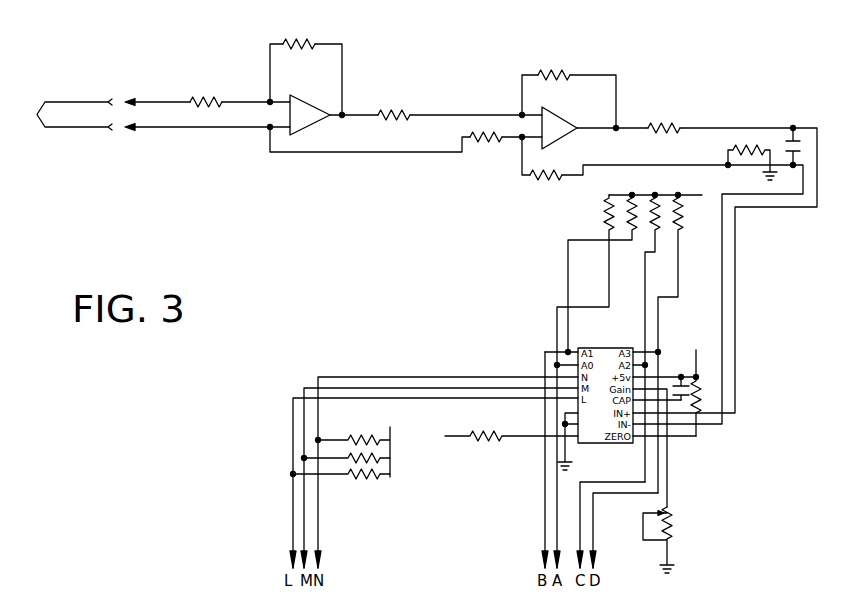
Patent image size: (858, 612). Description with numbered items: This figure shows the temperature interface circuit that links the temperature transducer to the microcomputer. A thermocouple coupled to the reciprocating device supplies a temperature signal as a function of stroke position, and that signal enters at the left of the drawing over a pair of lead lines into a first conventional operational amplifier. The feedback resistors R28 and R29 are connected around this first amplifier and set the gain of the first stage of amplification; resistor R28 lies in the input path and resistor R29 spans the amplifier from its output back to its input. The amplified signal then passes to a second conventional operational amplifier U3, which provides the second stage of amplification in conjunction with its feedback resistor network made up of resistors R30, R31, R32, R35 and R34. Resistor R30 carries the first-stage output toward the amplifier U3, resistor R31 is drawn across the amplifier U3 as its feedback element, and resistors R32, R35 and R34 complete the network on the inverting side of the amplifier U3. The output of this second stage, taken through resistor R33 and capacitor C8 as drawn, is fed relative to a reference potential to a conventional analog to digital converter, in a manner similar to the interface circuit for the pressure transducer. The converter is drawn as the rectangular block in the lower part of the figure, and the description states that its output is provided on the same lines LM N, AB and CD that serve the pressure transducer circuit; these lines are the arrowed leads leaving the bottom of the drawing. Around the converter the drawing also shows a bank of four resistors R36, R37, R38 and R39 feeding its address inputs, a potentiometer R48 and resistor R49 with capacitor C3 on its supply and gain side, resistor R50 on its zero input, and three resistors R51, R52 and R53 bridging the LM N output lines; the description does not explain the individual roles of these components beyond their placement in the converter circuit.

The feedback resistor R28 is at (222, 90).
The feedback resistor R29 is at (300, 41).
The feedback network resistor R30 is at (412, 104).
The feedback network resistor R31 is at (562, 62).
The feedback network resistor R32 is at (478, 140).
The resistor R33 is at (655, 124).
The feedback network resistor R34 is at (742, 148).
The feedback network resistor R35 is at (555, 178).
The resistor R36 is at (605, 202).
The resistor R37 is at (636, 228).
The resistor R38 is at (660, 202).
The resistor R39 is at (682, 222).
The potentiometer R48 is at (672, 536).
The resistor R49 is at (700, 388).
The resistor R50 is at (472, 438).
The resistor R51 is at (372, 437).
The resistor R52 is at (375, 460).
The resistor R53 is at (356, 478).
The capacitor C3 is at (676, 382).
The capacitor C8 is at (799, 154).
The operational amplifier U3 is at (556, 143).